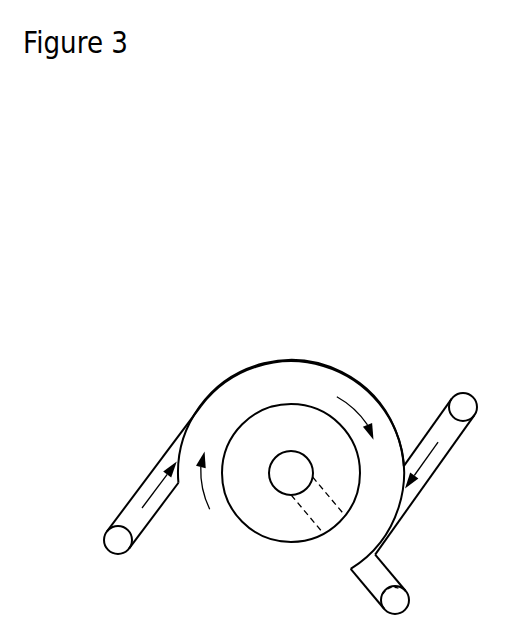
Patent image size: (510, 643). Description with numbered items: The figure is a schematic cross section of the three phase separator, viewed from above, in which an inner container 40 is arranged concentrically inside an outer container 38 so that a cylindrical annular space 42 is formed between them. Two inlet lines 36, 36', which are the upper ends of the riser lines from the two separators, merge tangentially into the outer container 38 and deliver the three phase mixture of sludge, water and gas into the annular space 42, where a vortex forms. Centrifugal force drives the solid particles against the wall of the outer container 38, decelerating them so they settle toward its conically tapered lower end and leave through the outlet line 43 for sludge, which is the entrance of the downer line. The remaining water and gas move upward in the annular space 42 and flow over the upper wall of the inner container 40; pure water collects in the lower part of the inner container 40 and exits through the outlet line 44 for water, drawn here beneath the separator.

The inlet line 36 is at (146, 480).
The inlet line 36' is at (437, 474).
The outer container 38 is at (372, 392).
The inner container 40 is at (316, 410).
The cylindrical annular space 42 is at (282, 385).
The outlet line for sludge 43 is at (300, 468).
The outlet line for water 44 is at (378, 577).